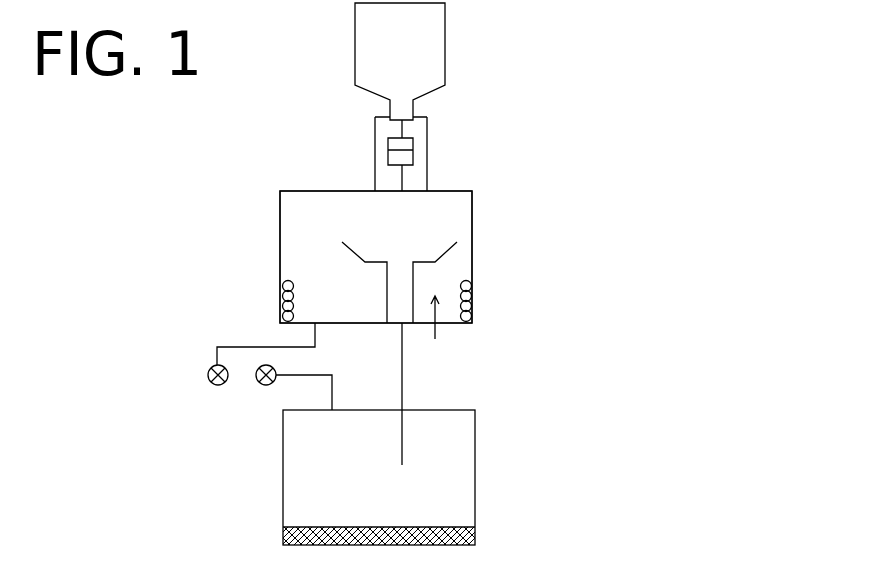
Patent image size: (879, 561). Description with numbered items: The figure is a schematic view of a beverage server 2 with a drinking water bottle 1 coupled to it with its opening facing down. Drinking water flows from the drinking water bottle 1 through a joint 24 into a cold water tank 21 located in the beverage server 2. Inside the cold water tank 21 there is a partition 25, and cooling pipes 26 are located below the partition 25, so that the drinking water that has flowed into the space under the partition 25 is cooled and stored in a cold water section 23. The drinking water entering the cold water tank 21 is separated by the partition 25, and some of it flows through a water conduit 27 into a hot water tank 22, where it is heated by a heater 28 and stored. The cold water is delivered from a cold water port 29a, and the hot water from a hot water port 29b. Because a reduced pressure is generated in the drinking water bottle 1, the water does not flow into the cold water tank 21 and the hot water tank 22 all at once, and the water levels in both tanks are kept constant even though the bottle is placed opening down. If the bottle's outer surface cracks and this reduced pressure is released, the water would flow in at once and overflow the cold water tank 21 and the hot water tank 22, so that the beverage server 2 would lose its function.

The drinking water bottle 1 is at (436, 57).
The beverage server 2 is at (188, 249).
The cold water tank 21 is at (481, 209).
The hot water tank 22 is at (484, 467).
The cold water section 23 is at (435, 339).
The joint 24 is at (422, 152).
The partition 25 is at (456, 254).
The cooling pipe 26 is at (481, 309).
The water conduit 27 is at (412, 383).
The heater 28 is at (484, 538).
The cold water port 29a is at (199, 379).
The hot water port 29b is at (270, 394).